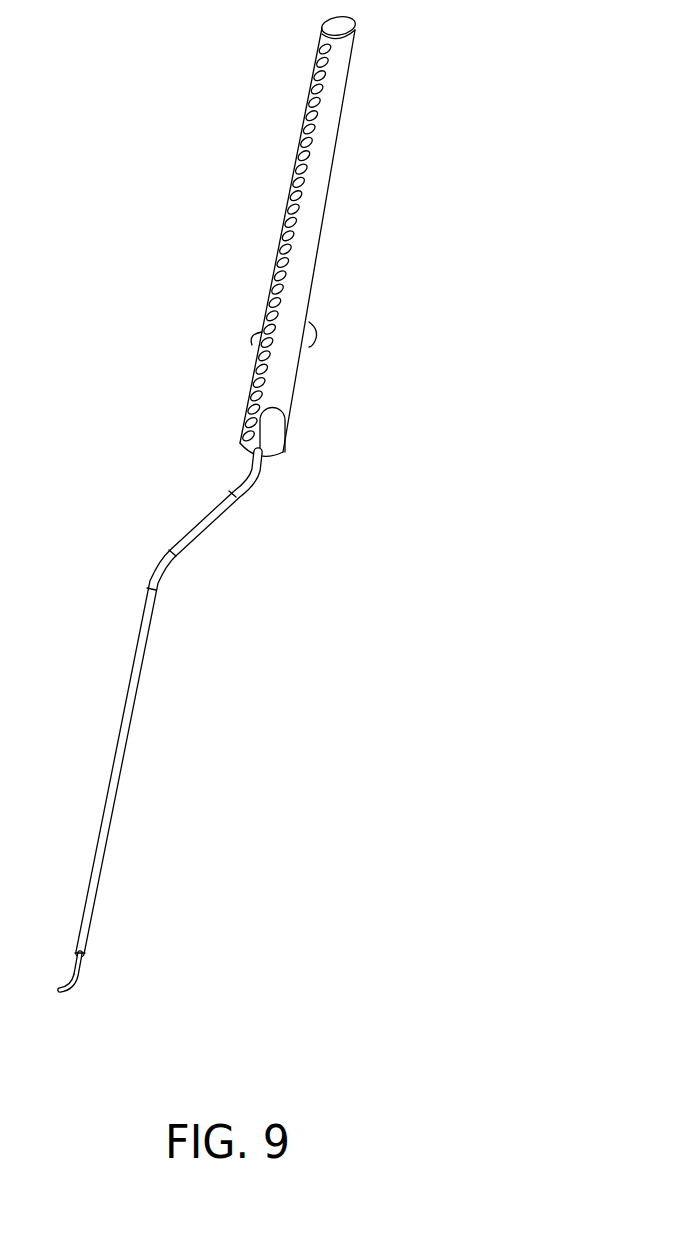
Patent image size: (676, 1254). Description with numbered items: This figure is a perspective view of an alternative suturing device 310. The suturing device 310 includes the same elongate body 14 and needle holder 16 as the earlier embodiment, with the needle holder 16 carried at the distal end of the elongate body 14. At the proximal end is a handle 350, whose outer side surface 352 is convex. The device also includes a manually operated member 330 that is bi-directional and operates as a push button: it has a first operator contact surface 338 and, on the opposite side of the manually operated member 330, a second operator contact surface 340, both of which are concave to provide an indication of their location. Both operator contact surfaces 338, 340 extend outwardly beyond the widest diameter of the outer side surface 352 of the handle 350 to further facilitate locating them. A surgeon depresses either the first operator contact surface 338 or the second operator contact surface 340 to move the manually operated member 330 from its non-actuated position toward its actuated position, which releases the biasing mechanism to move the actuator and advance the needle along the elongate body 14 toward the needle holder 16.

The elongate body 14 is at (125, 737).
The needle holder 16 is at (68, 989).
The suturing device 310 is at (309, 523).
The manually operated member 330 is at (292, 235).
The first operator contact surface 338 is at (250, 341).
The second operator contact surface 340 is at (318, 331).
The handle 350 is at (315, 273).
The outer side surface 352 is at (278, 207).